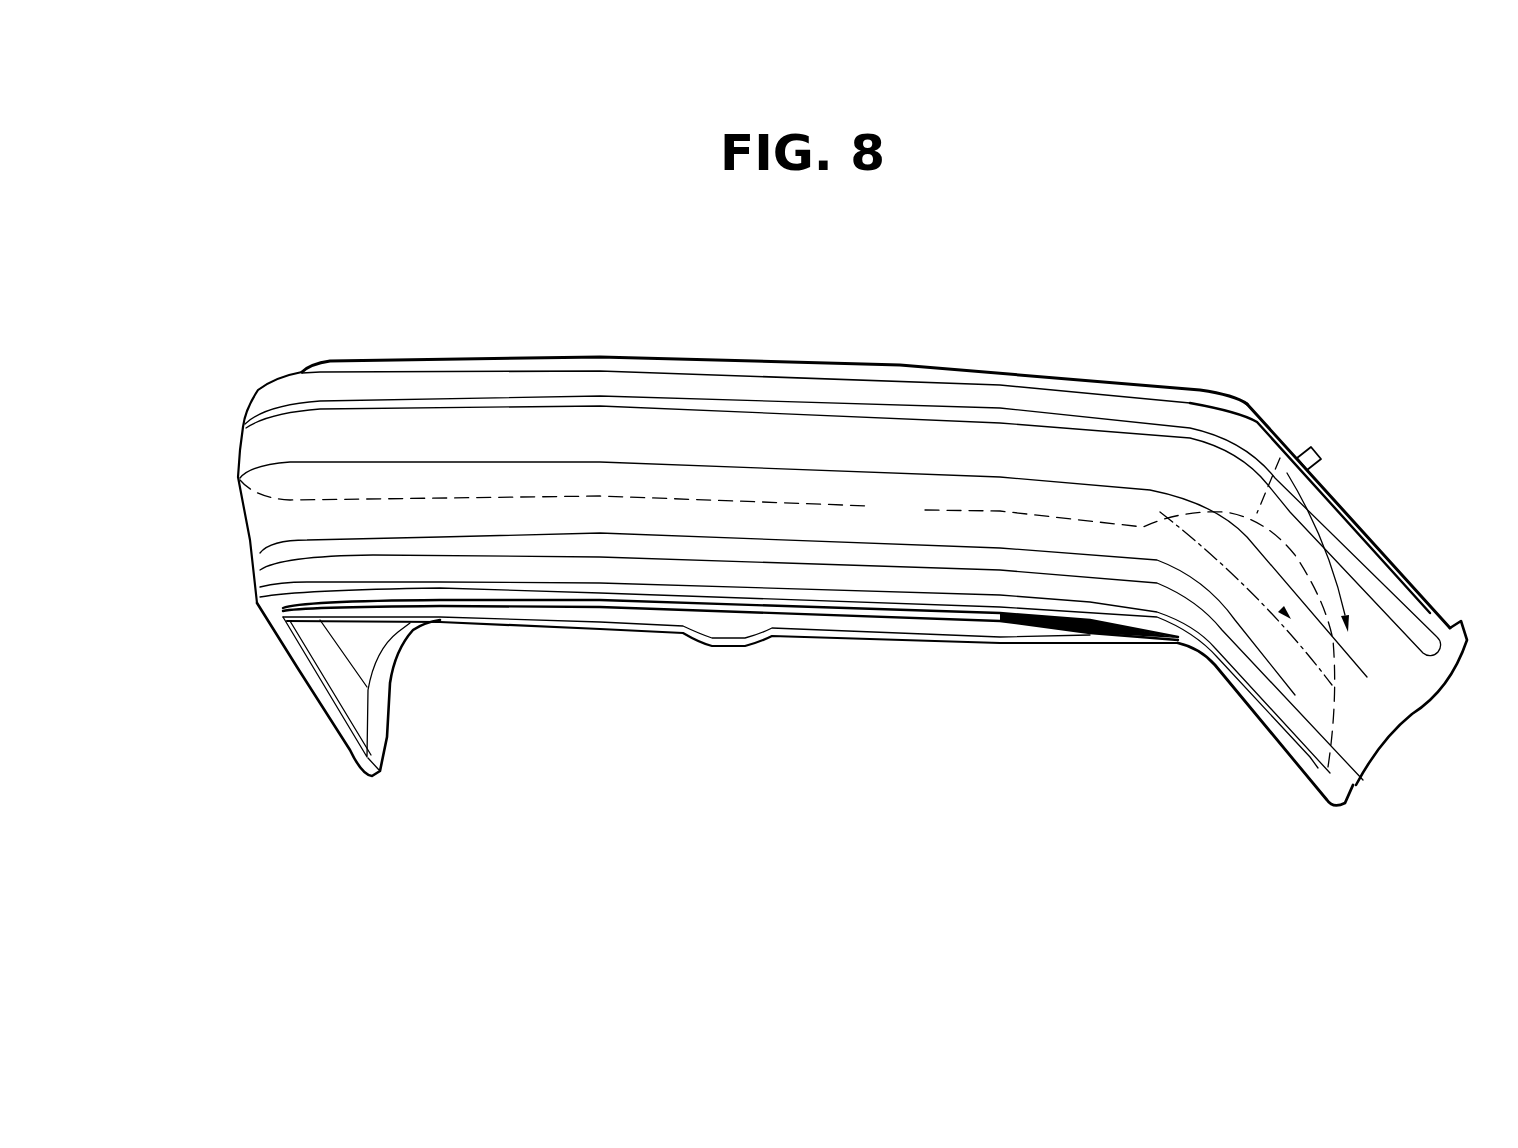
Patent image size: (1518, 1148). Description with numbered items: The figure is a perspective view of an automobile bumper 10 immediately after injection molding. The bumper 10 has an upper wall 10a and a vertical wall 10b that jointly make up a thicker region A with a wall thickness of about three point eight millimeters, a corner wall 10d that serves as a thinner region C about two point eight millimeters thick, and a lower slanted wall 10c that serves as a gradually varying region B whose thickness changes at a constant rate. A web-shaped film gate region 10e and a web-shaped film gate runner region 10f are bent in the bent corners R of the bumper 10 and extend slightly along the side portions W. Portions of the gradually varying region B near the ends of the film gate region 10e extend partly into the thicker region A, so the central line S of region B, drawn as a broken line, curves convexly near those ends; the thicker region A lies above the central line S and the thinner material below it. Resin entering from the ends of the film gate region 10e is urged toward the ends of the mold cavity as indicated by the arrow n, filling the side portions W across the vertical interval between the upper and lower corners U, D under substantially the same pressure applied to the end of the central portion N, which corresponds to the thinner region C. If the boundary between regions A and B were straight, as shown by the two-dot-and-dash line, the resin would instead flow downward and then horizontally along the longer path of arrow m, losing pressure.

The automobile bumper 10 is at (817, 545).
The upper wall 10a is at (288, 360).
The vertical wall 10b is at (255, 440).
The lower slanted wall 10c is at (962, 528).
The corner wall 10d is at (1073, 590).
The film gate region 10e is at (1315, 450).
The film gate runner region 10f is at (1263, 403).
The bent corners R is at (241, 412).
The thicker region A is at (554, 412).
The gradually varying region B is at (553, 520).
The thinner region C is at (635, 580).
The central line S is at (787, 612).
The central portion N is at (711, 722).
The side portions W is at (290, 744).
The upper corner U is at (1465, 633).
The lower corner D is at (1350, 785).
The arrow m is at (1246, 598).
The arrow n is at (1329, 571).